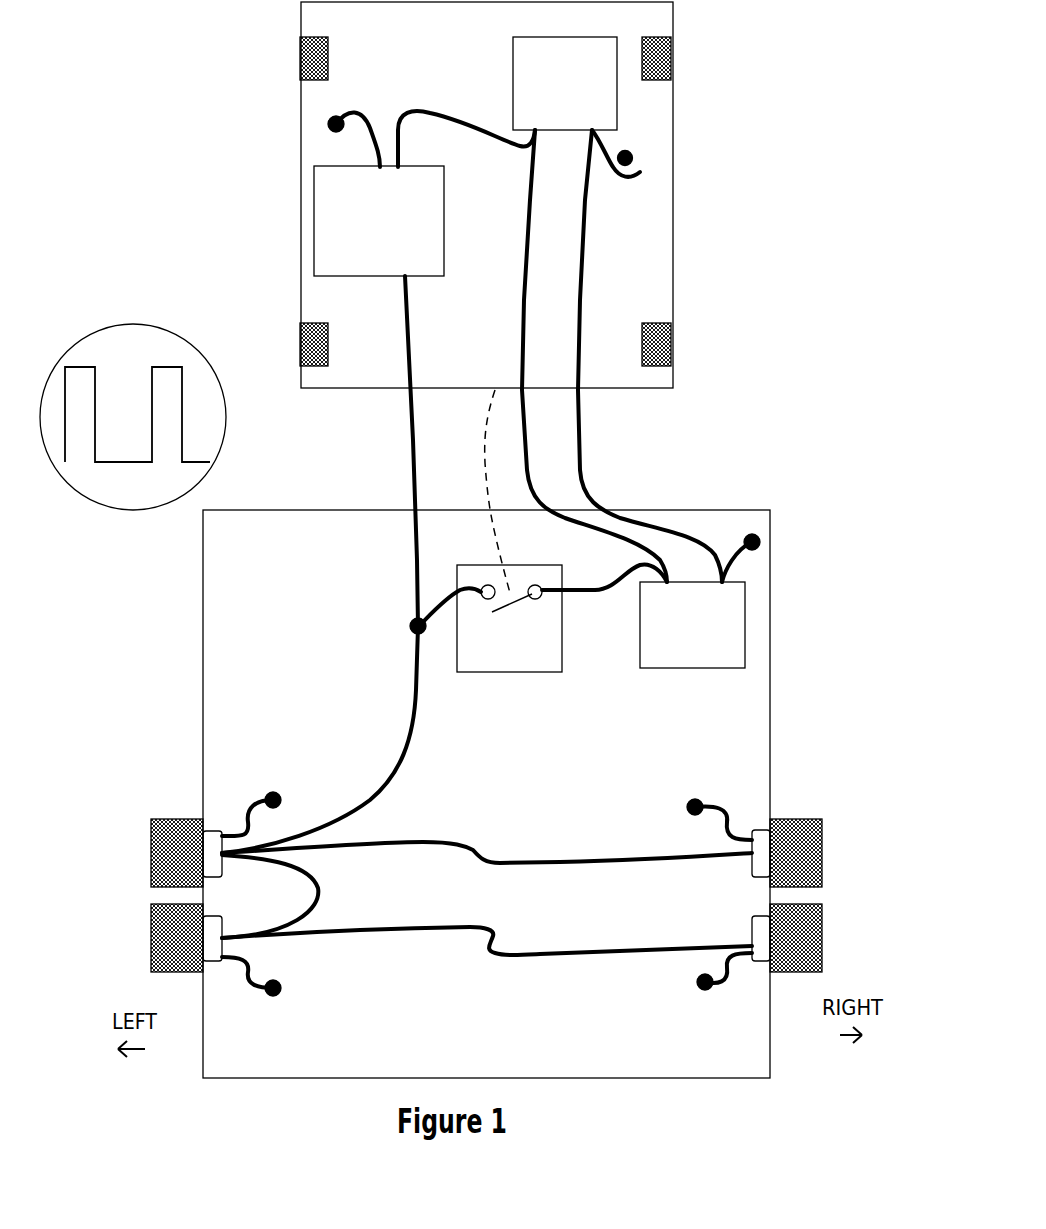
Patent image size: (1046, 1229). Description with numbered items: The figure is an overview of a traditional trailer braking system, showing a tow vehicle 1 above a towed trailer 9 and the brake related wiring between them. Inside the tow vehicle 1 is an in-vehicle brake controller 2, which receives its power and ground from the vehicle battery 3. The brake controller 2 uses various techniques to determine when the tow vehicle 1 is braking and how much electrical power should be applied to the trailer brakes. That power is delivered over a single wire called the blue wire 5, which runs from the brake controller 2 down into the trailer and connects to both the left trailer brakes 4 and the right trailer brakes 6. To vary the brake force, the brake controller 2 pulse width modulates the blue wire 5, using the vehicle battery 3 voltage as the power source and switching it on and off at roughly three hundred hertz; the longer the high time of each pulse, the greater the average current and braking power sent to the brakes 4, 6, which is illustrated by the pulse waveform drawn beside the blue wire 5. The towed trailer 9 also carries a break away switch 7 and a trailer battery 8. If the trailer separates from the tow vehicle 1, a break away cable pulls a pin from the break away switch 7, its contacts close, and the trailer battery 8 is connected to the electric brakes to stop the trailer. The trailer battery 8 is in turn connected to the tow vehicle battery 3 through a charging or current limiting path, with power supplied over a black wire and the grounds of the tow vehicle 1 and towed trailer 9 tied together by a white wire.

The tow vehicle 1 is at (486, 195).
The brake controller 2 is at (379, 194).
The vehicle battery 3 is at (519, 107).
The left trailer brakes 4 is at (207, 855).
The blue wire 5 is at (185, 423).
The right trailer brakes 6 is at (762, 865).
The break away switch 7 is at (542, 618).
The trailer battery 8 is at (700, 601).
The towed trailer 9 is at (486, 794).